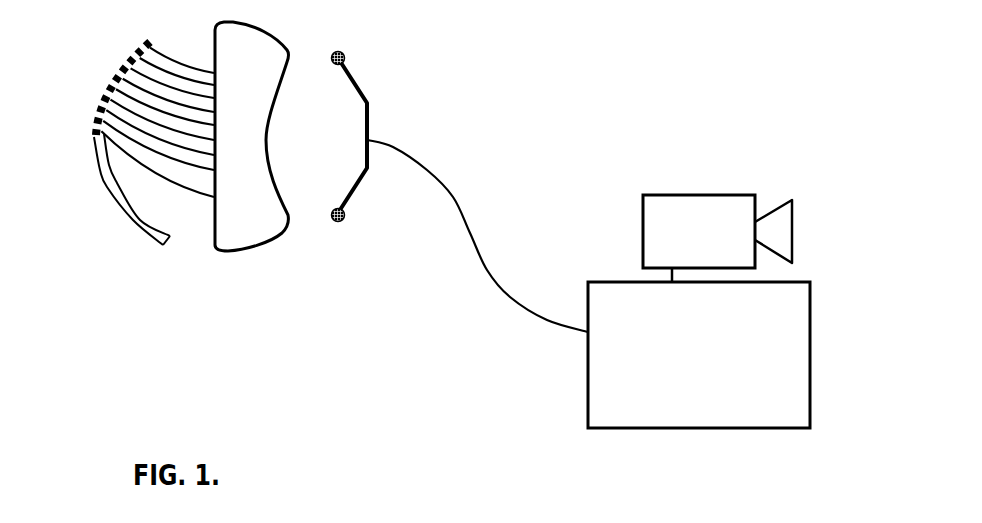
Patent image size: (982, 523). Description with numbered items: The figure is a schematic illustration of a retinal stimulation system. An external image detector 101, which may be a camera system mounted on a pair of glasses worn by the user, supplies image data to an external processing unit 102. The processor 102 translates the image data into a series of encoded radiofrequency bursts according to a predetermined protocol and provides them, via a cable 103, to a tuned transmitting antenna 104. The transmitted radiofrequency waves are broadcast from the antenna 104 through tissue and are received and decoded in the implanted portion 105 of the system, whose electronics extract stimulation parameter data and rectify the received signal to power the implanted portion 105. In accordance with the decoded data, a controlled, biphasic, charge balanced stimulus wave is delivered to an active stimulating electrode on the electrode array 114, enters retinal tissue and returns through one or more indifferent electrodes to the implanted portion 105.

The external image detector 101 is at (695, 195).
The external processing unit 102 is at (810, 403).
The cable 103 is at (480, 257).
The tuned transmitting antenna 104 is at (362, 90).
The implanted portion 105 is at (265, 25).
The electrode array 114 is at (122, 69).